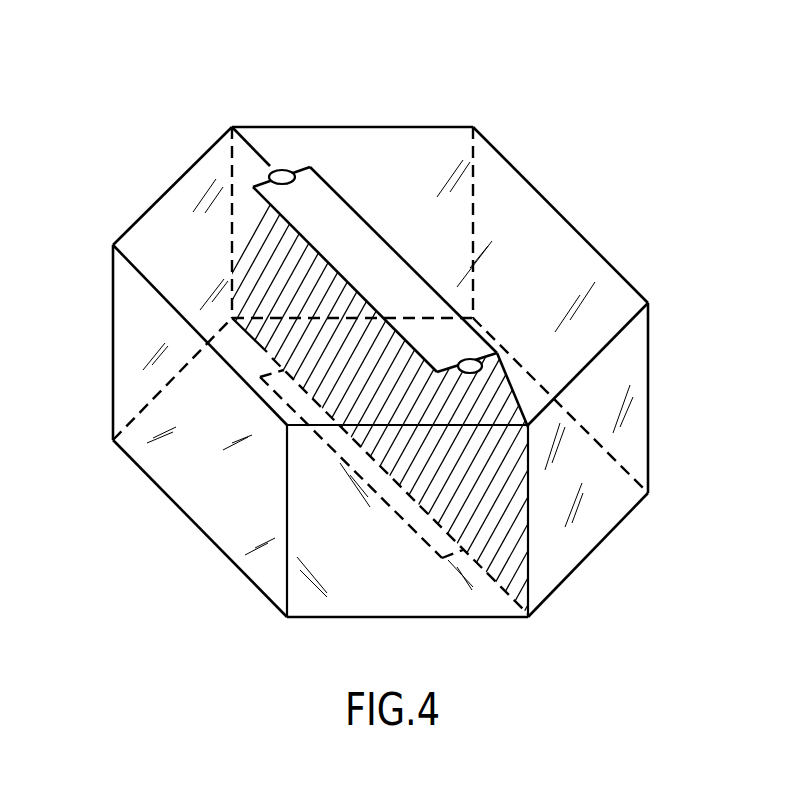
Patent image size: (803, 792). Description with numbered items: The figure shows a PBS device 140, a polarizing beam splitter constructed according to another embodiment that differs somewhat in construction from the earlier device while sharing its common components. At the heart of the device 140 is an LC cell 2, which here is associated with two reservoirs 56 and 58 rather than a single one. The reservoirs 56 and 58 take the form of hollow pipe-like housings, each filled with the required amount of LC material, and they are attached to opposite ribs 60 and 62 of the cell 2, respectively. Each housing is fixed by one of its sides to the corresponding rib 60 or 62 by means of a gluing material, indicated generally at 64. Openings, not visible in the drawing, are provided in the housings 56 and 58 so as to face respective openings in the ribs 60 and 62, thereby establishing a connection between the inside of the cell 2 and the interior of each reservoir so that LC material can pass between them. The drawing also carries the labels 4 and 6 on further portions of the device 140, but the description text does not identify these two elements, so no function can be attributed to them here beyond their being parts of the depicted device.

The PBS device 140 is at (422, 334).
The LC cell 2 is at (218, 257).
The second block 4 is at (587, 263).
The front block portion 6 is at (345, 577).
The reservoir 56 is at (338, 246).
The reservoir 58 is at (266, 396).
The rib 60 is at (256, 150).
The rib 62 is at (497, 585).
The gluing material 64 is at (465, 342).